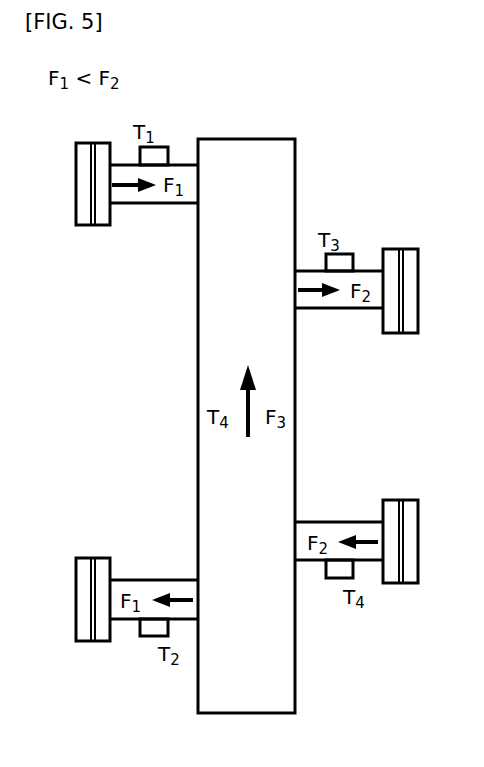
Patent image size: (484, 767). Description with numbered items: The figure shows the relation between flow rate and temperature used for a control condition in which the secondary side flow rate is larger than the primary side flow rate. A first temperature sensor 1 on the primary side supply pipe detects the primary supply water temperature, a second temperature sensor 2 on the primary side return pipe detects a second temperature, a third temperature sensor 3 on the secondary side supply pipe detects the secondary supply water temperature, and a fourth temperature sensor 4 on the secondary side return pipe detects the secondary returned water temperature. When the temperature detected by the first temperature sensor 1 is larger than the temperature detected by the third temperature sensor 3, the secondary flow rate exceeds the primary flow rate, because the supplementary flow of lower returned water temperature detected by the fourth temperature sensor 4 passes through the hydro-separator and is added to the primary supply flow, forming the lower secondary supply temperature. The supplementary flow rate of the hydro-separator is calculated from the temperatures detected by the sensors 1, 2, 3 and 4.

The first temperature sensor 1 is at (166, 147).
The second temperature sensor 2 is at (148, 636).
The third temperature sensor 3 is at (351, 254).
The fourth temperature sensor 4 is at (331, 578).